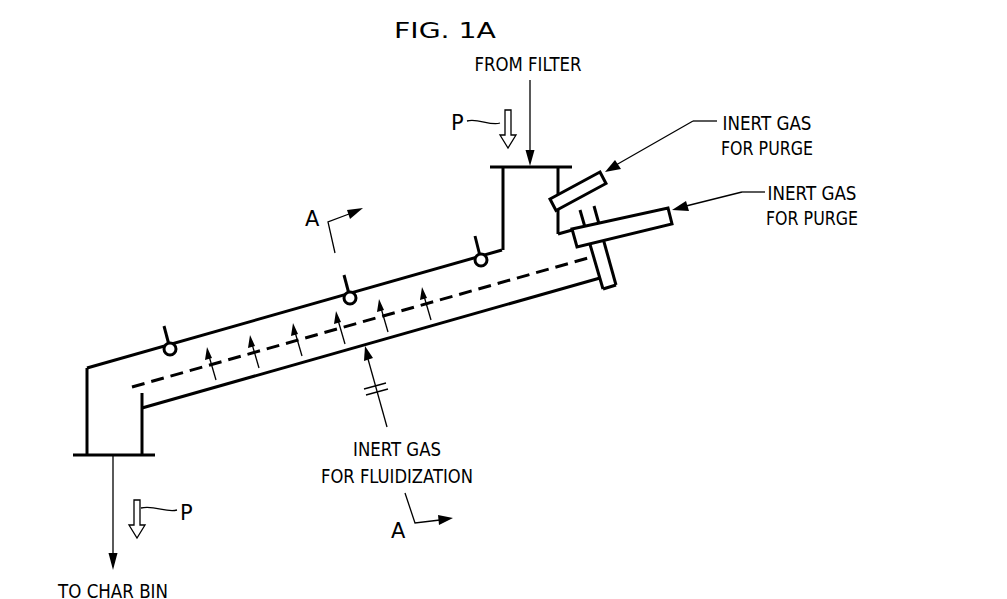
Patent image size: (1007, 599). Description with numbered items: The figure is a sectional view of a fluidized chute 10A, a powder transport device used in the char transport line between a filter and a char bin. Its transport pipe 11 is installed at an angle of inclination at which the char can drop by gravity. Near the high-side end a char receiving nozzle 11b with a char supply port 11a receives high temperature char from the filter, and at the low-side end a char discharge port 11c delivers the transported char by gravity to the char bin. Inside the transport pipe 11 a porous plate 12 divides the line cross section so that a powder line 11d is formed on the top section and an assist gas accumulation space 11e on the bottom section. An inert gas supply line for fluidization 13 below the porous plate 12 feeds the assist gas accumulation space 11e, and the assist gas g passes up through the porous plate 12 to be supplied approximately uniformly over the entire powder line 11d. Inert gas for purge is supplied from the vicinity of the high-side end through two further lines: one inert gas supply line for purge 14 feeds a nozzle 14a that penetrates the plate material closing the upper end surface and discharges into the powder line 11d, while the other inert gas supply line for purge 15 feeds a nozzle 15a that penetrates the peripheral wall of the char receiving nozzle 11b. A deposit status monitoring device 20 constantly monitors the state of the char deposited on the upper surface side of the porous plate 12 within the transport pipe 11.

The fluidized chute 10A is at (389, 146).
The transport pipe 11 is at (227, 313).
The char supply port 11a is at (555, 166).
The char receiving nozzle 11b is at (503, 192).
The char discharge port 11c is at (97, 458).
The powder line 11d is at (274, 316).
The assist gas accumulation space 11e is at (285, 368).
The porous plate 12 is at (505, 283).
The inert gas supply line for fluidization 13 is at (386, 414).
The inert gas supply line for purge 14 is at (716, 200).
The nozzle 14a is at (660, 232).
The inert gas supply line for purge 15 is at (666, 137).
The nozzle 15a is at (607, 189).
The deposit status monitoring device 20 is at (173, 344).
The assist gas g is at (432, 314).